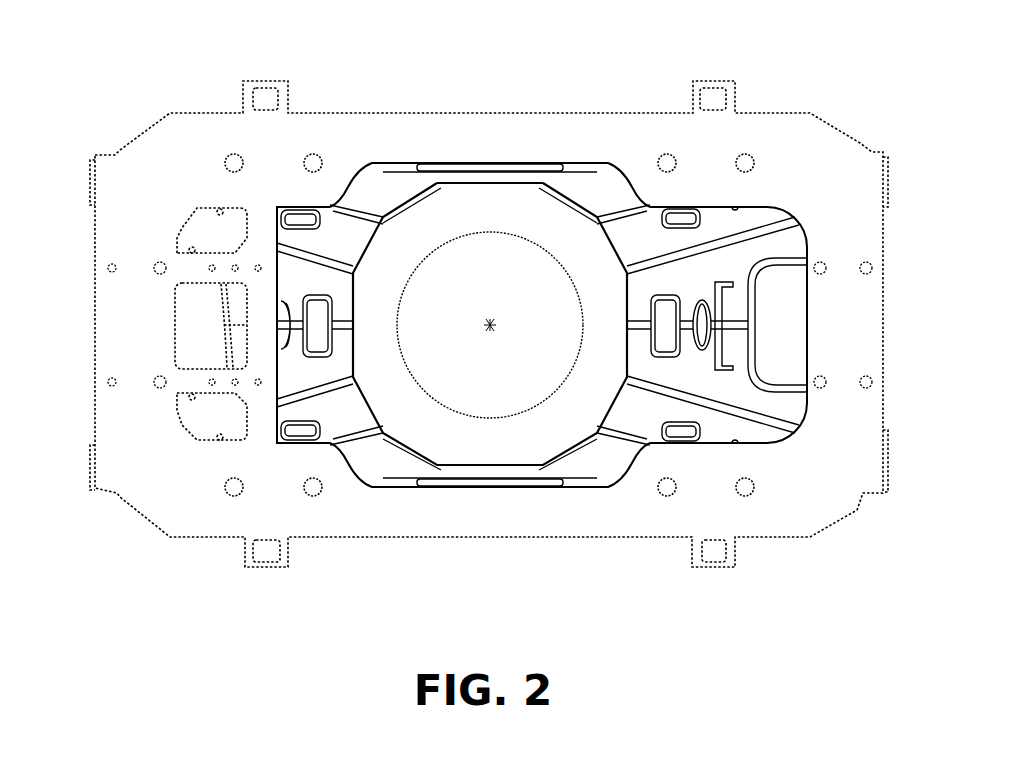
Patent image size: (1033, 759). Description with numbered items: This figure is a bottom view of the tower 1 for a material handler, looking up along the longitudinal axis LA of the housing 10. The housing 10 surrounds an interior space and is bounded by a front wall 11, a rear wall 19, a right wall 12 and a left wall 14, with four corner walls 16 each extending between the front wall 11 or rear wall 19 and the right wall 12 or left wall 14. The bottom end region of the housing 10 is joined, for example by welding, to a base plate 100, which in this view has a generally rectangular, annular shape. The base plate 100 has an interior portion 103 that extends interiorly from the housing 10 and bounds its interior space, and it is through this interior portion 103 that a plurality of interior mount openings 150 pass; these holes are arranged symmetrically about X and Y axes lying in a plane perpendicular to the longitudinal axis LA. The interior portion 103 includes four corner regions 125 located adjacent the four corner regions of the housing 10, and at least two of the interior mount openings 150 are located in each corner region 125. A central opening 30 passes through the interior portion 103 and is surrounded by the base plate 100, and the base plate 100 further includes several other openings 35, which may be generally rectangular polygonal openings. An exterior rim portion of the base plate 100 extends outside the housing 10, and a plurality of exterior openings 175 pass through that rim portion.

The tower 1 is at (196, 624).
The housing 10 is at (231, 413).
The front wall 11 is at (477, 470).
The right wall 12 is at (223, 297).
The left wall 14 is at (758, 287).
The corner wall 16 is at (380, 198).
The rear wall 19 is at (477, 183).
The central opening 30 is at (777, 325).
The other openings 35 is at (144, 345).
The base plate 100 is at (489, 333).
The interior portion 103 is at (488, 152).
The corner regions 125 is at (208, 152).
The interior mount openings 150 is at (316, 160).
The exterior openings 175 is at (268, 97).
The longitudinal axis LA is at (488, 330).